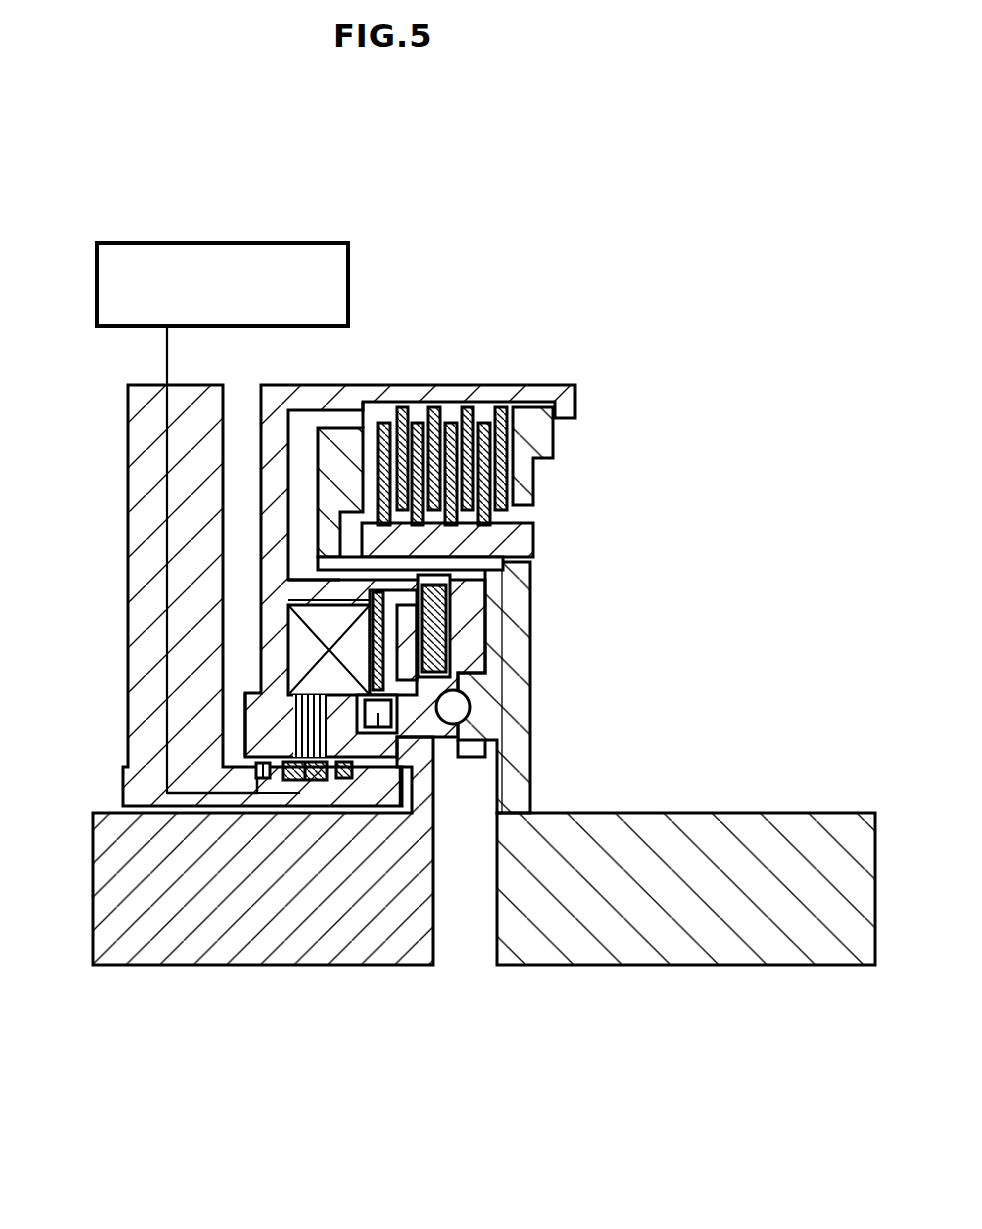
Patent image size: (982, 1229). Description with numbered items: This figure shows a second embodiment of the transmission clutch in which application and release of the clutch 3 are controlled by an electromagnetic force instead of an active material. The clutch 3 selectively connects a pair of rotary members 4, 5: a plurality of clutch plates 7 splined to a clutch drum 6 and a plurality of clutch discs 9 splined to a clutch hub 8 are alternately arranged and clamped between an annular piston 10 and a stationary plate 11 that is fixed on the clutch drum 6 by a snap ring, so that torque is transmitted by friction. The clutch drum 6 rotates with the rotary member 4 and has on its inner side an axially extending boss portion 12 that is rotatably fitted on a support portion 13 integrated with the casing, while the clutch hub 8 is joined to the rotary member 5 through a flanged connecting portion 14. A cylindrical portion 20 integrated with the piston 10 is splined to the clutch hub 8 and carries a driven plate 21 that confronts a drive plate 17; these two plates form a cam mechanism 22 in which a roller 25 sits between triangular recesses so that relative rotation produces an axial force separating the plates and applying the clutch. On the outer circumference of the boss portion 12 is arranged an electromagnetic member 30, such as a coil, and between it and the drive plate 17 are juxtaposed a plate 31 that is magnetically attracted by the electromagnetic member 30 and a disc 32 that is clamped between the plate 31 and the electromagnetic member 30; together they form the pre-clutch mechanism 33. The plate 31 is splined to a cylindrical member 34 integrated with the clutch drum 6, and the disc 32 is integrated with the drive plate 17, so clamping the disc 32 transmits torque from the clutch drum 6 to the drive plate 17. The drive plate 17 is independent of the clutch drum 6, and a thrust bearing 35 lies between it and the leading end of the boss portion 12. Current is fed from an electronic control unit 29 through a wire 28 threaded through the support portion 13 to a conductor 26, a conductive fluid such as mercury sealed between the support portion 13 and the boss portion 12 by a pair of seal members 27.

The clutch 3 is at (590, 440).
The rotary member 4 is at (180, 930).
The rotary member 5 is at (723, 814).
The clutch drum 6 is at (320, 397).
The clutch plates 7 is at (463, 410).
The clutch hub 8 is at (533, 537).
The clutch discs 9 is at (533, 479).
The annular piston 10 is at (345, 447).
The stationary plate 11 is at (568, 432).
The boss portion 12 is at (272, 722).
The support portion 13 is at (128, 457).
The flanged connecting portion 14 is at (518, 784).
The drive plate 17 is at (478, 752).
The cylindrical portion 20 is at (320, 550).
The driven plate 21 is at (530, 684).
The cam mechanism 22 is at (478, 785).
The roller 25 is at (472, 710).
The conductor 26 is at (318, 782).
The seal members 27 is at (257, 772).
The wire 28 is at (167, 513).
The electronic control unit 29 is at (348, 288).
The electromagnetic member 30 is at (302, 640).
The plate 31 is at (452, 622).
The disc 32 is at (410, 578).
The pre-clutch mechanism 33 is at (462, 653).
The cylindrical member 34 is at (460, 568).
The thrust bearing 35 is at (383, 782).